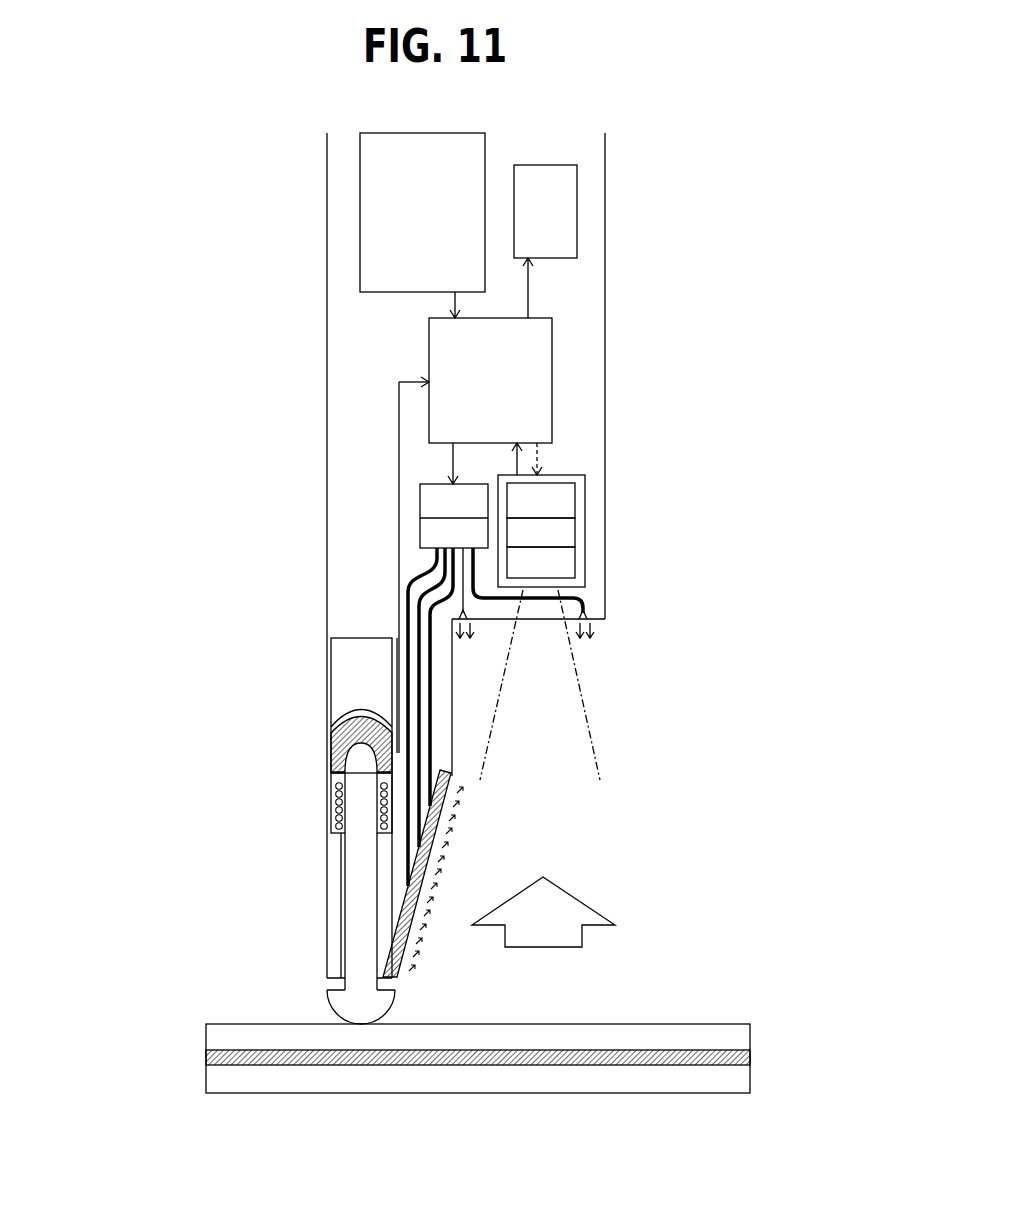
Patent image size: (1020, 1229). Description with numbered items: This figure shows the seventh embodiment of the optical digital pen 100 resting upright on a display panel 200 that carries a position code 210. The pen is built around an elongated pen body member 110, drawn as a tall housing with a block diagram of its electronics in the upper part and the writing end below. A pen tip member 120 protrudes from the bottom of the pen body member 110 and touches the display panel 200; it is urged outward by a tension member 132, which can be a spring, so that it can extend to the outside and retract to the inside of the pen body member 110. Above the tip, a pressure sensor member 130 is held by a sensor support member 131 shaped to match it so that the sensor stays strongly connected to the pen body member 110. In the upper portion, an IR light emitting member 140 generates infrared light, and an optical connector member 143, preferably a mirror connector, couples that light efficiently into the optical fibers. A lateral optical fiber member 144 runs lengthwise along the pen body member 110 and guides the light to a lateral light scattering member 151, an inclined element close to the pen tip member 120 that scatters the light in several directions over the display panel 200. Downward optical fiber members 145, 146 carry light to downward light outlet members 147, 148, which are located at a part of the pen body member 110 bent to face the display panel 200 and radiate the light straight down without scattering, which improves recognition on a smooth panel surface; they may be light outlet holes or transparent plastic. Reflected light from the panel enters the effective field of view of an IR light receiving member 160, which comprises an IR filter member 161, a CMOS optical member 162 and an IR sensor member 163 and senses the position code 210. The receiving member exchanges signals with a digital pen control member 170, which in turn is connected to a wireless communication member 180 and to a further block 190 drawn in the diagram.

The optical digital pen 100 is at (314, 199).
The pen body member 110 is at (327, 346).
The pen tip member 120 is at (335, 1000).
The pressure sensor member 130 is at (331, 745).
The sensor support member 131 is at (364, 705).
The tension member 132 is at (337, 803).
The IR light emitting member 140 is at (454, 516).
The optical connector member 143 is at (425, 528).
The lateral optical fiber member 144 is at (438, 562).
The downward optical fiber member 145 is at (437, 592).
The downward optical fiber member 146 is at (588, 608).
The downward light outlet member 147 is at (462, 617).
The downward light outlet member 148 is at (588, 615).
The lateral light scattering member 151 is at (403, 937).
The IR light receiving member 160 is at (587, 522).
The IR filter member 161 is at (541, 500).
The CMOS optical member 162 is at (541, 532).
The IR sensor member 163 is at (541, 562).
The digital pen control member 170 is at (490, 401).
The wireless communication member 180 is at (545, 241).
The power supply 190 is at (422, 225).
The display panel 200 is at (200, 1014).
The position code 210 is at (206, 1060).